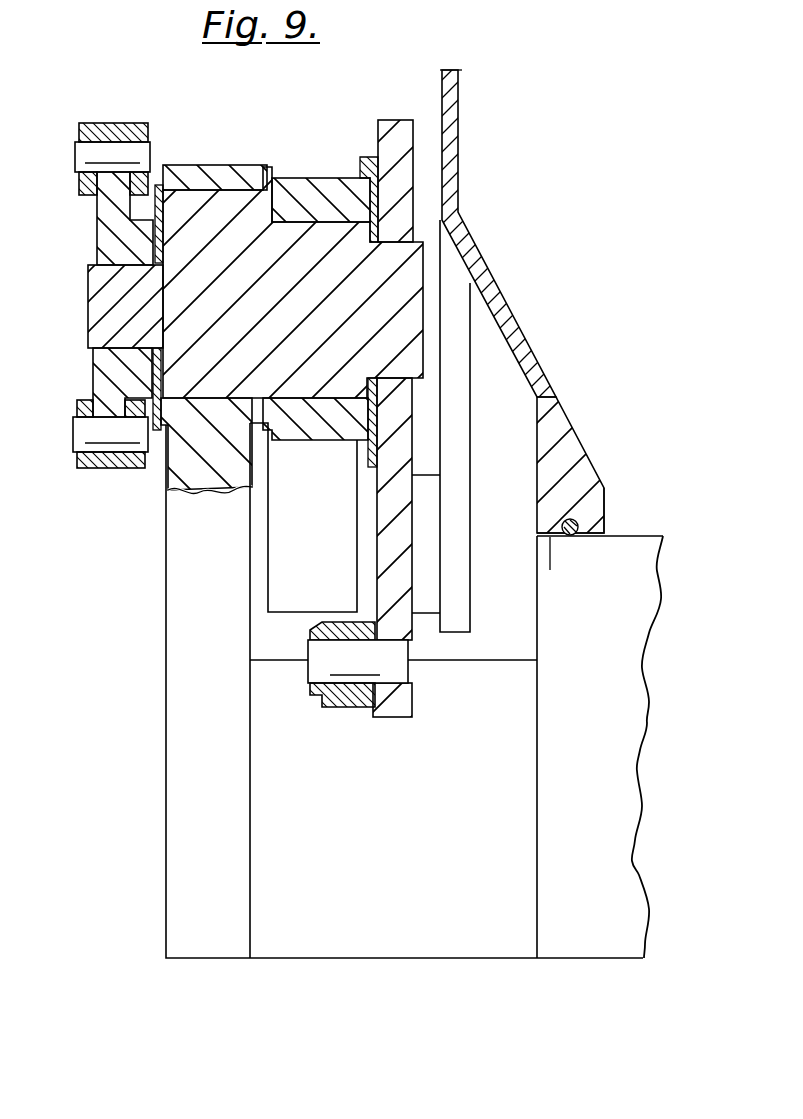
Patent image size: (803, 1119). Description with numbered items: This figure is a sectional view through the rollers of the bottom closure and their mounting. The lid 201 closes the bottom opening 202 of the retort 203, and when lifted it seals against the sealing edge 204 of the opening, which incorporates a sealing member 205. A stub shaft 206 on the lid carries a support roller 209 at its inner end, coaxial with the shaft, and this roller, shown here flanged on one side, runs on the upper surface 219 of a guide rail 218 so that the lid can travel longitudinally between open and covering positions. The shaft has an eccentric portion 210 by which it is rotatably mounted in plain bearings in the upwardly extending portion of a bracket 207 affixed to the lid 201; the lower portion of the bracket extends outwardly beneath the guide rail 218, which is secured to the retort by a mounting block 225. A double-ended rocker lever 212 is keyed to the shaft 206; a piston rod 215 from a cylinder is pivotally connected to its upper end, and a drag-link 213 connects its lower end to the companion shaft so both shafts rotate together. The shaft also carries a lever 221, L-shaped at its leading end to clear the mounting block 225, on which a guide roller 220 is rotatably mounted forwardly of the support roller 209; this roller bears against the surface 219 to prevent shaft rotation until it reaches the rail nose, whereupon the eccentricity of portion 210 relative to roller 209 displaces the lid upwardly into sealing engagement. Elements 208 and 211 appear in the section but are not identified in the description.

The lid 201 is at (625, 880).
The bottom opening 202 is at (604, 512).
The retort 203 is at (540, 370).
The sealing edge 204 is at (550, 537).
The sealing member 205 is at (567, 533).
The stub shaft 206 is at (90, 316).
The bracket 207 is at (173, 733).
The ring 208 is at (216, 166).
The support roller 209 is at (313, 184).
The eccentric portion 210 is at (240, 270).
The brake disc 211 is at (336, 220).
The double-ended rocker lever 212 is at (98, 237).
The drag-link 213 is at (85, 470).
The piston rod 215 is at (95, 122).
The guide rail 218 is at (272, 565).
The upper surface 219 is at (313, 440).
The guide roller 220 is at (355, 708).
The lever 221 is at (398, 580).
The mounting block 225 is at (428, 532).